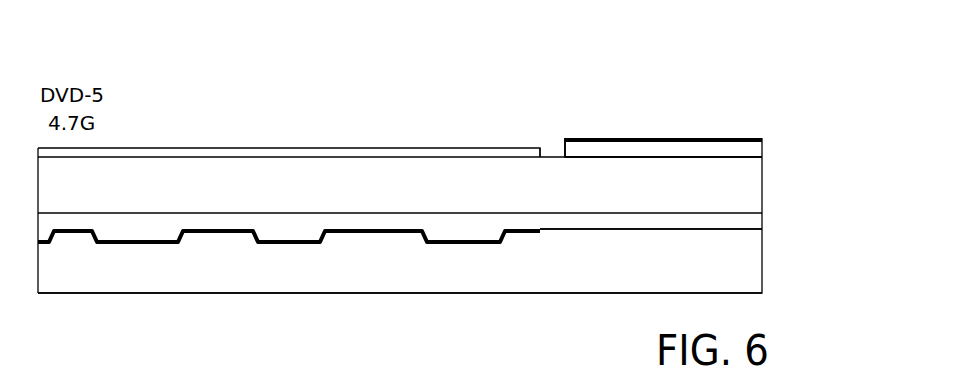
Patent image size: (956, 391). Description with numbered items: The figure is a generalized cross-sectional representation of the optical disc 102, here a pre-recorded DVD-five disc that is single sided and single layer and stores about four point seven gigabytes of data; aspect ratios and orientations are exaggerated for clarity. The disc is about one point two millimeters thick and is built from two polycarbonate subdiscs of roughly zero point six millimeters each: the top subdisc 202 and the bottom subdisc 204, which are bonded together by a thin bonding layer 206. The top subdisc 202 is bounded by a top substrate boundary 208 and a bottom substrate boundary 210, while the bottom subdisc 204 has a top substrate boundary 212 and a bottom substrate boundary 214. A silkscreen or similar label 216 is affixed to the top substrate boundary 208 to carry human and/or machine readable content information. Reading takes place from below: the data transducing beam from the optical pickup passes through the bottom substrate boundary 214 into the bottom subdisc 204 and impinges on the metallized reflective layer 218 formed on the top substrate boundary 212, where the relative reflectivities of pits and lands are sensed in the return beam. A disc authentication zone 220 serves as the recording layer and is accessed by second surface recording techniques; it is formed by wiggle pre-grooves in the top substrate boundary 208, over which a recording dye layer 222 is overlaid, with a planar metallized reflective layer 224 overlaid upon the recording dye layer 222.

The optical disc 102 is at (152, 48).
The top subdisc 202 is at (743, 178).
The bottom subdisc 204 is at (736, 262).
The bonding layer 206 is at (745, 220).
The top substrate boundary 208 is at (556, 150).
The bottom substrate boundary 210 is at (415, 213).
The top substrate boundary 212 is at (568, 228).
The bottom substrate boundary 214 is at (420, 293).
The label 216 is at (180, 148).
The metallized reflective layer 218 is at (220, 231).
The disc authentication zone 220 is at (664, 65).
The recording dye layer 222 is at (612, 150).
The planar metallized reflective layer 224 is at (645, 138).